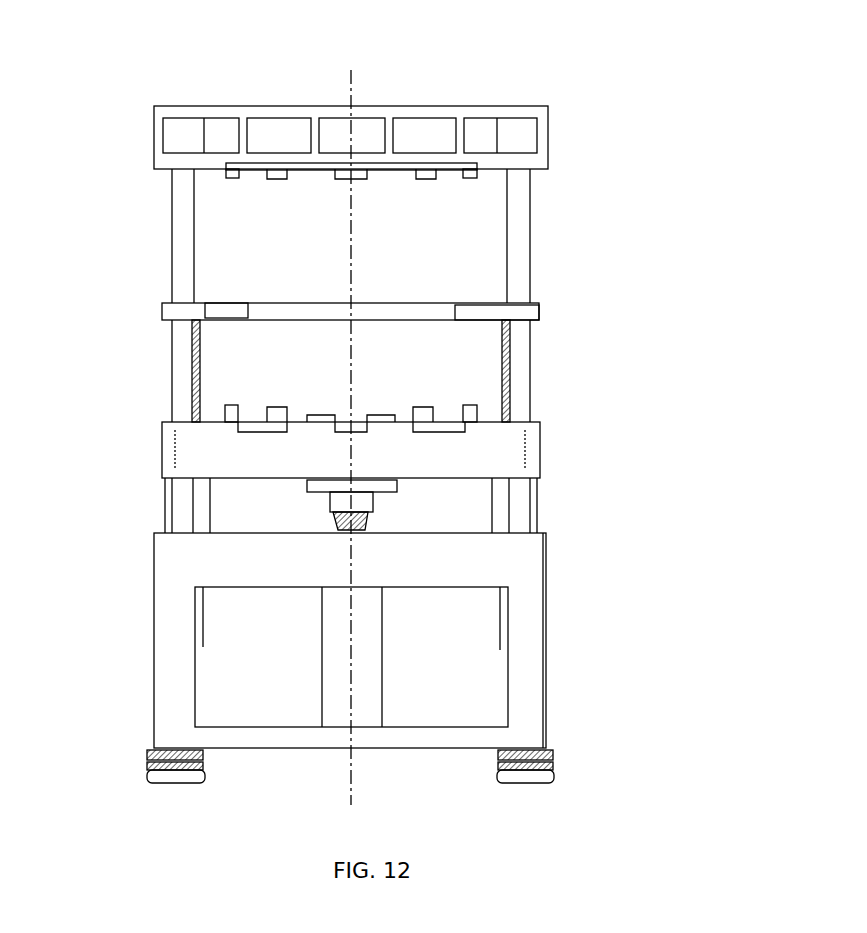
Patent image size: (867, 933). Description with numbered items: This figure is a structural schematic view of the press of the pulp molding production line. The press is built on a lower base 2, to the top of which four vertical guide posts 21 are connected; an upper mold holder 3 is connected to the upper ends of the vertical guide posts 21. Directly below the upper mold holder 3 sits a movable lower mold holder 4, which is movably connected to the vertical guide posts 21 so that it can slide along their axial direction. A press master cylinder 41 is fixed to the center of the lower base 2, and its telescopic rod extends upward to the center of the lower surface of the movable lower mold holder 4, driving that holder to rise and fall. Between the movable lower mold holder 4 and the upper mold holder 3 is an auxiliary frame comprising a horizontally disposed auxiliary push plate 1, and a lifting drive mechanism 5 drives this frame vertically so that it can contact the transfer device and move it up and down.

The auxiliary push plate 1 is at (472, 304).
The lower base 2 is at (532, 595).
The upper mold holder 3 is at (426, 114).
The movable lower mold holder 4 is at (510, 453).
The lifting drive mechanism 5 is at (492, 506).
The vertical guide post 21 is at (178, 243).
The press master cylinder 41 is at (372, 661).